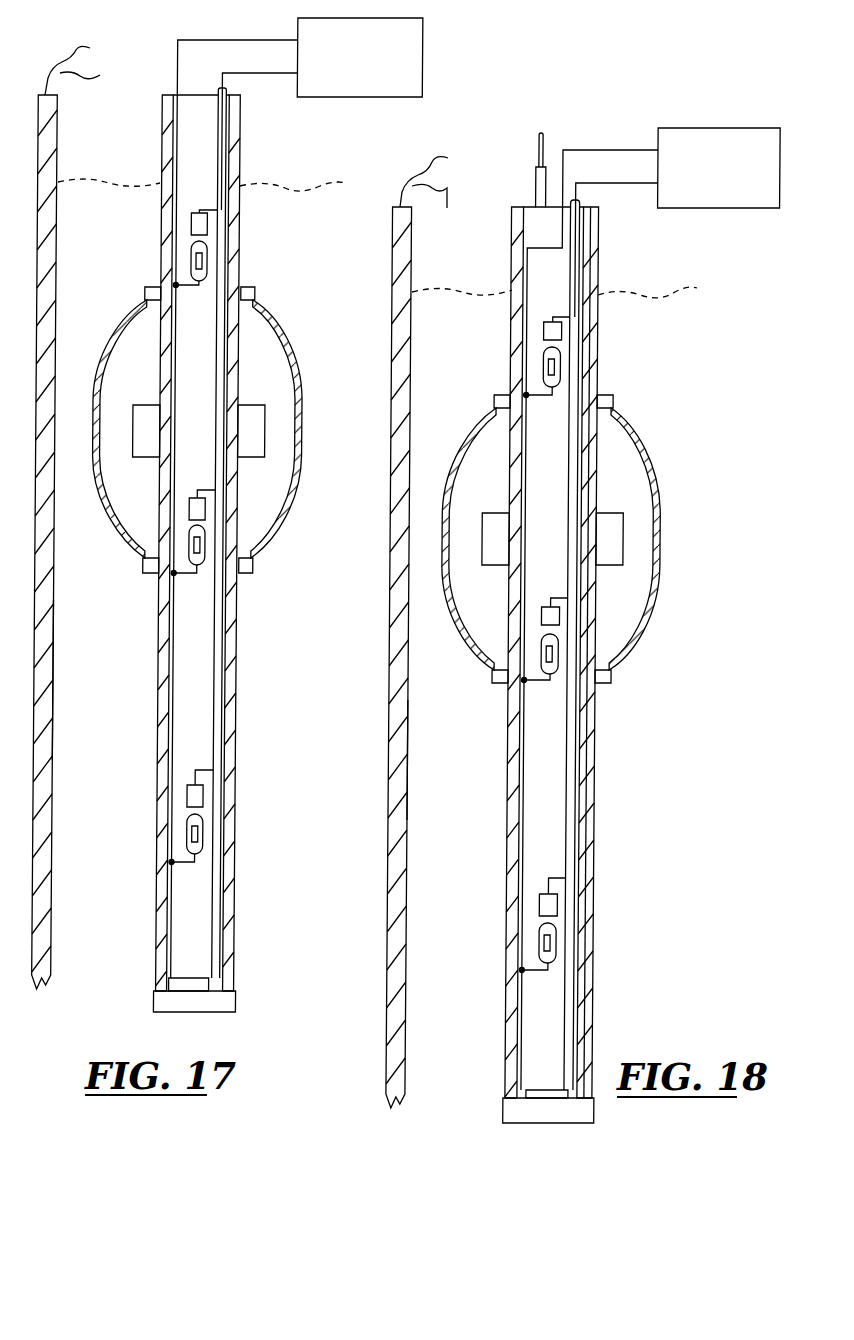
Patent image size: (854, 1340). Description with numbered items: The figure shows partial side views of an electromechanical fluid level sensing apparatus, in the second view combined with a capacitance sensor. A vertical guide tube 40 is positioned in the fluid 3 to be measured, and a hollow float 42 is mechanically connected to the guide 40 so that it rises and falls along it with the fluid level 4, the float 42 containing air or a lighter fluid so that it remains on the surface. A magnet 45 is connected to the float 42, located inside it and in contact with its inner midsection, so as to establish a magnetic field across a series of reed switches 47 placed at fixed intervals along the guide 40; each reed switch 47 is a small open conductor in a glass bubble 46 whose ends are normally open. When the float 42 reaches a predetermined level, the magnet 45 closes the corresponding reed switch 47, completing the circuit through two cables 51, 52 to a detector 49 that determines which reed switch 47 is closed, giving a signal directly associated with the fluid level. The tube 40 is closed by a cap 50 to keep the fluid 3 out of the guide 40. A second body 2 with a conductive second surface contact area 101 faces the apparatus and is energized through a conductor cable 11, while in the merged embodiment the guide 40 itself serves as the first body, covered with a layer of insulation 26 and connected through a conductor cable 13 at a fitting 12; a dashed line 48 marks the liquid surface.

In FIG. 17, the second body 2 is at (52, 855).
In FIG. 18, the second body 2 is at (408, 963).
In FIG. 17, the fluid 3 is at (216, 559).
In FIG. 18, the fluid 3 is at (560, 661).
In FIG. 17, the fluid level 4 is at (302, 420).
In FIG. 18, the fluid level 4 is at (662, 517).
In FIG. 17, the second conductor cable 11 is at (87, 73).
In FIG. 18, the second conductor cable 11 is at (432, 197).
In FIG. 18, the fitting 12 is at (532, 197).
In FIG. 18, the conductor cable 13 is at (536, 150).
In FIG. 18, the layer of insulation 26 is at (597, 340).
In FIG. 17, the guide 40 is at (235, 890).
In FIG. 18, the guide 40 is at (594, 947).
In FIG. 17, the float 42 is at (275, 536).
In FIG. 18, the float 42 is at (650, 617).
In FIG. 17, the magnet 45 is at (268, 424).
In FIG. 18, the magnet 45 is at (628, 520).
In FIG. 17, the glass bubble 46 is at (191, 262).
In FIG. 17, the reed switch 47 is at (186, 532).
In FIG. 17, the liquid level 48 is at (293, 193).
In FIG. 18, the liquid level 48 is at (643, 300).
In FIG. 17, the detector 49 is at (345, 97).
In FIG. 18, the detector 49 is at (698, 197).
In FIG. 17, the cap 50 is at (178, 1012).
In FIG. 18, the cap 50 is at (508, 1117).
In FIG. 17, the cable 51 is at (226, 40).
In FIG. 18, the cable 51 is at (577, 150).
In FIG. 17, the cable 52 is at (263, 75).
In FIG. 18, the cable 52 is at (617, 185).
In FIG. 17, the second surface contact area 101 is at (50, 675).
In FIG. 18, the second surface contact area 101 is at (408, 805).